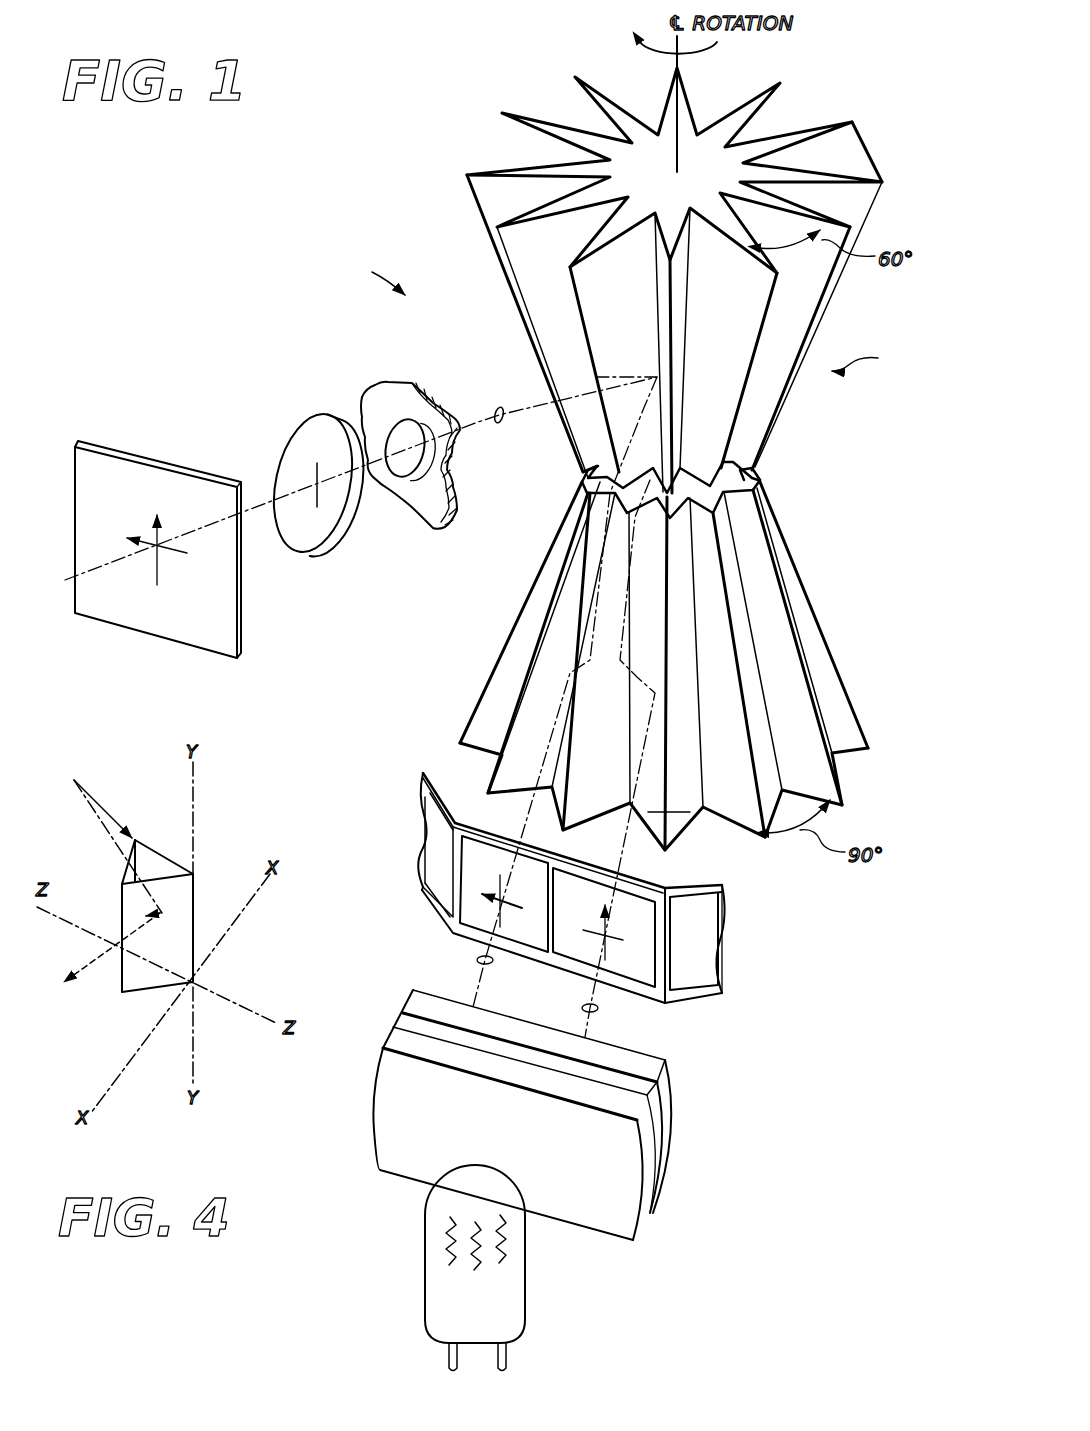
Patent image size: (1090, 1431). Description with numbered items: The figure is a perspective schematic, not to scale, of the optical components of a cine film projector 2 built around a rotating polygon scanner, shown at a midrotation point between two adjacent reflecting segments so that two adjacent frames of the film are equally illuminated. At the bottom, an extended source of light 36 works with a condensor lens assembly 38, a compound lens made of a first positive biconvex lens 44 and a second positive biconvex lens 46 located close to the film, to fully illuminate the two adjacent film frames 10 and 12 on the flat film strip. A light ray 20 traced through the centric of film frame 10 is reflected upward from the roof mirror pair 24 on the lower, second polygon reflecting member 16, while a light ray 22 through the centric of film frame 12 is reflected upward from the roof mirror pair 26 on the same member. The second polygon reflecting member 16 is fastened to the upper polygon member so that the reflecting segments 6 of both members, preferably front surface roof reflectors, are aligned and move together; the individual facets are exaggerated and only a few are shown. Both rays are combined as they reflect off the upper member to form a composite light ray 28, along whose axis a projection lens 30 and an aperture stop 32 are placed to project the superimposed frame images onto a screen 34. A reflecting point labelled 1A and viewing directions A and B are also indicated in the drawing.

The reflecting segments 6 is at (495, 182).
The reflector point 1A is at (812, 180).
The viewing direction A is at (866, 365).
The second polygon reflecting member 16 is at (757, 482).
The roof mirror pair 24 is at (528, 712).
The roof mirror pair 26 is at (680, 812).
The composite light ray 28 is at (499, 408).
The cine film projector 2 is at (373, 280).
The screen 34 is at (120, 470).
The projection lens 30 is at (290, 418).
The aperture stop 32 is at (378, 388).
The film frame 10 is at (482, 860).
The film frame 12 is at (650, 900).
The light ray 20 is at (477, 960).
The light ray 22 is at (600, 1010).
The direction B is at (703, 1005).
The condensor lens assembly 38 is at (695, 1188).
The second positive biconvex lens 46 is at (672, 1125).
The first positive biconvex lens 44 is at (647, 1216).
The extended source of light 36 is at (502, 1310).